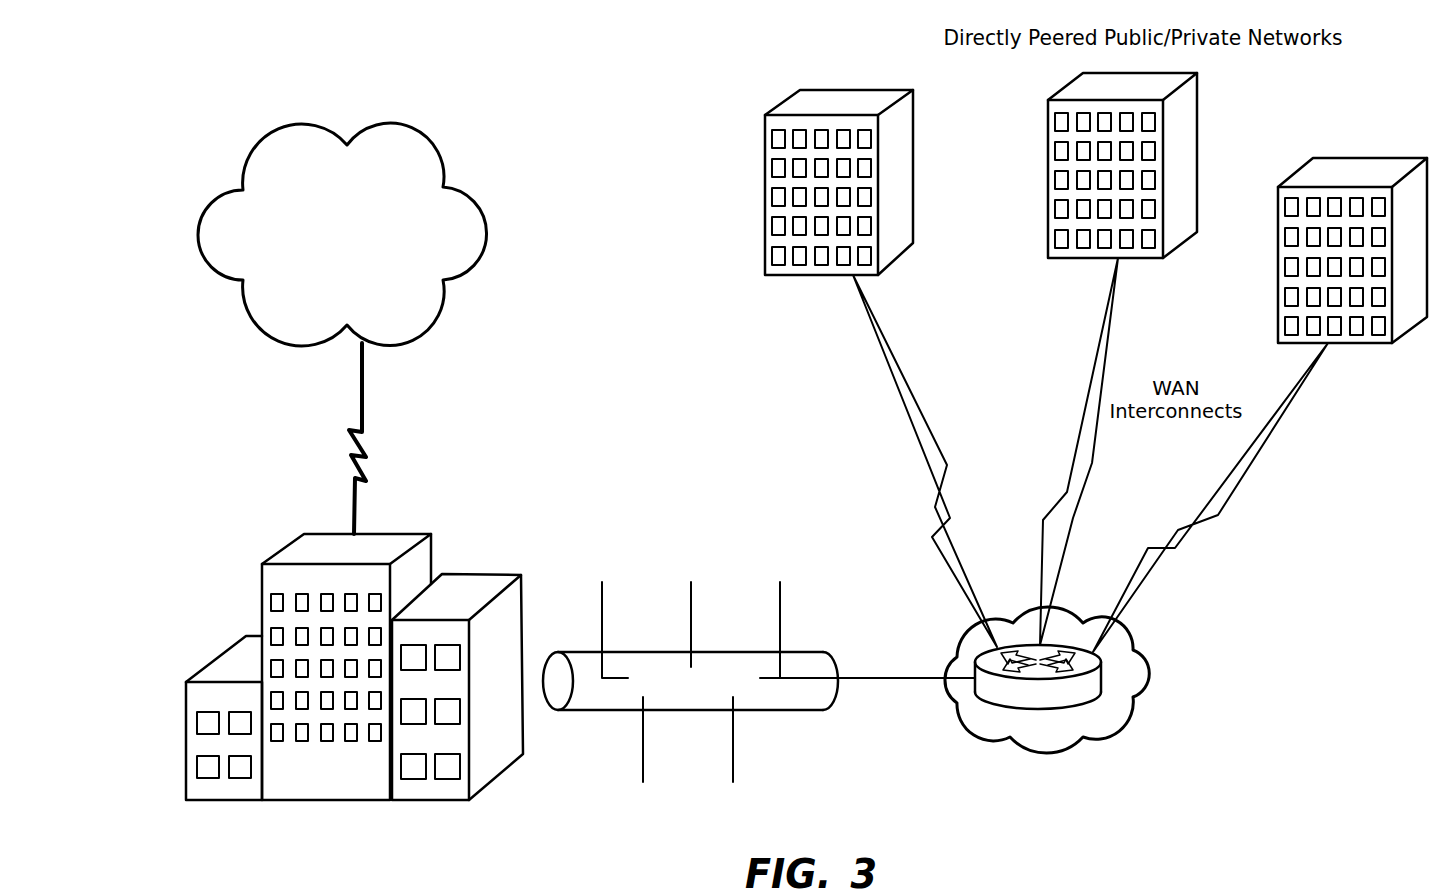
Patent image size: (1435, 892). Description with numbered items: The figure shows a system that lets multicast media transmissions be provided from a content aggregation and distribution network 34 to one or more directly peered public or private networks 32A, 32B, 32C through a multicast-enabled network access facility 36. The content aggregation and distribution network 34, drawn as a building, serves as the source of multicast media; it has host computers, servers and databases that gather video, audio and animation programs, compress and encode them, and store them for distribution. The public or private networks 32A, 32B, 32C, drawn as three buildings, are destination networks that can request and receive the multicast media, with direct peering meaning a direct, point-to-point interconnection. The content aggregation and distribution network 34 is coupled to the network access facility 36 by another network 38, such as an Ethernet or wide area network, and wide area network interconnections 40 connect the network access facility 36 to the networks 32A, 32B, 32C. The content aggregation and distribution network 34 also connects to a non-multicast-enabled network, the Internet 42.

The directly peered public or private network 32A is at (913, 168).
The directly peered public or private network 32B is at (1200, 142).
The directly peered public or private network 32C is at (1275, 322).
The content aggregation and distribution network 34 is at (405, 533).
The multicast-enabled network access facility 36 is at (1156, 663).
The network 38 is at (658, 712).
The wide area network interconnections 40 is at (908, 422).
The Internet 42 is at (312, 126).